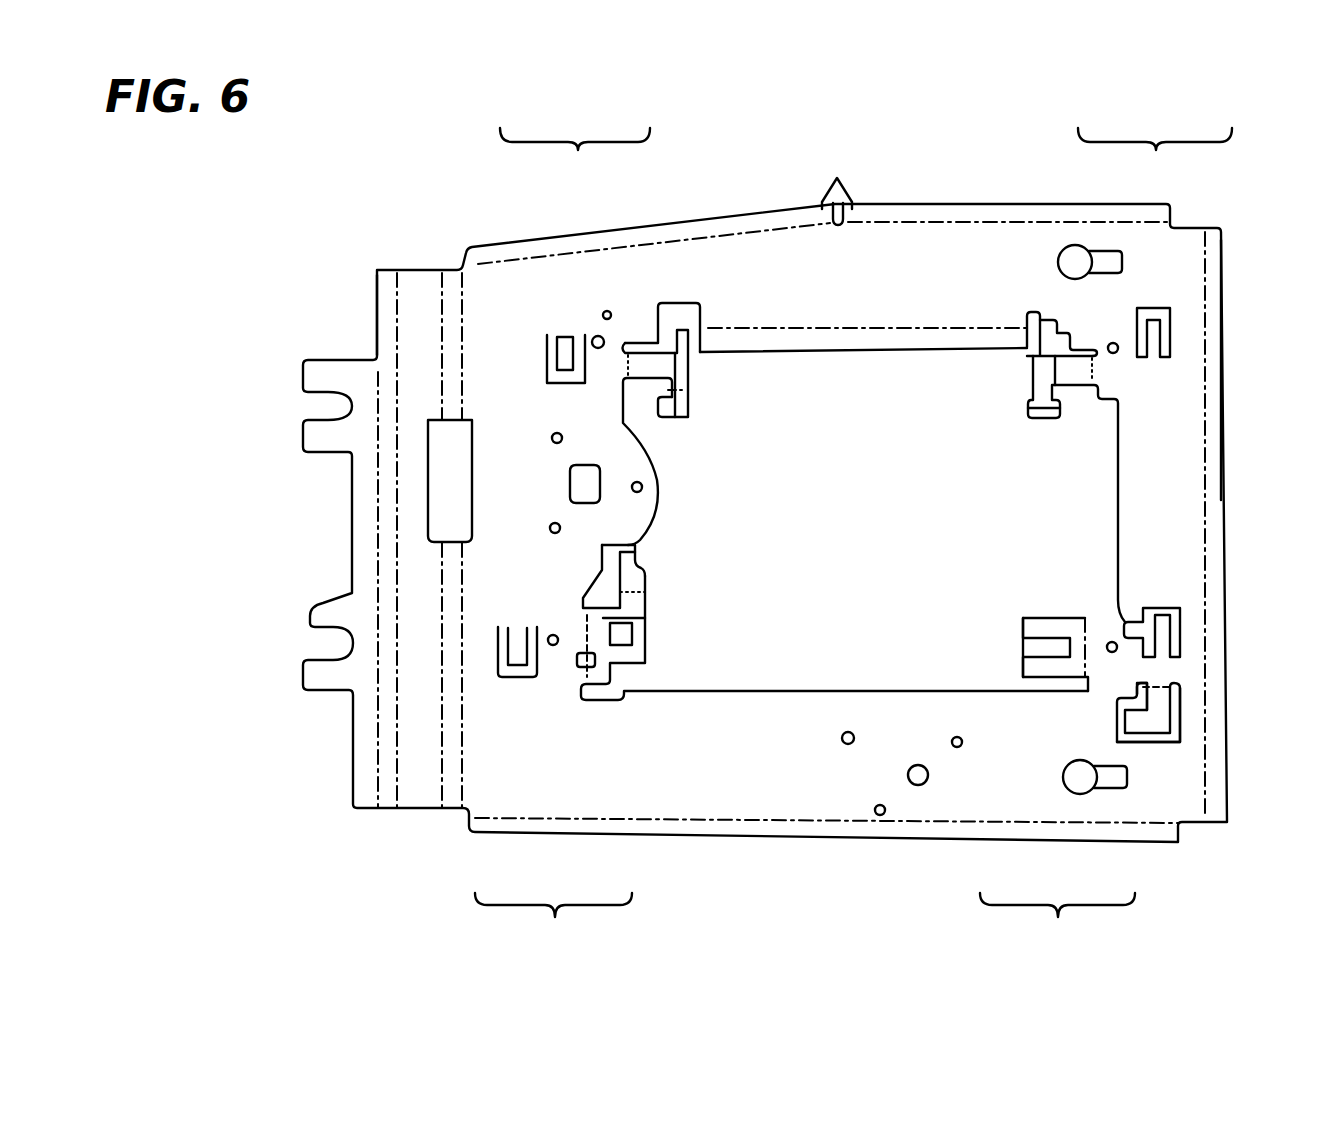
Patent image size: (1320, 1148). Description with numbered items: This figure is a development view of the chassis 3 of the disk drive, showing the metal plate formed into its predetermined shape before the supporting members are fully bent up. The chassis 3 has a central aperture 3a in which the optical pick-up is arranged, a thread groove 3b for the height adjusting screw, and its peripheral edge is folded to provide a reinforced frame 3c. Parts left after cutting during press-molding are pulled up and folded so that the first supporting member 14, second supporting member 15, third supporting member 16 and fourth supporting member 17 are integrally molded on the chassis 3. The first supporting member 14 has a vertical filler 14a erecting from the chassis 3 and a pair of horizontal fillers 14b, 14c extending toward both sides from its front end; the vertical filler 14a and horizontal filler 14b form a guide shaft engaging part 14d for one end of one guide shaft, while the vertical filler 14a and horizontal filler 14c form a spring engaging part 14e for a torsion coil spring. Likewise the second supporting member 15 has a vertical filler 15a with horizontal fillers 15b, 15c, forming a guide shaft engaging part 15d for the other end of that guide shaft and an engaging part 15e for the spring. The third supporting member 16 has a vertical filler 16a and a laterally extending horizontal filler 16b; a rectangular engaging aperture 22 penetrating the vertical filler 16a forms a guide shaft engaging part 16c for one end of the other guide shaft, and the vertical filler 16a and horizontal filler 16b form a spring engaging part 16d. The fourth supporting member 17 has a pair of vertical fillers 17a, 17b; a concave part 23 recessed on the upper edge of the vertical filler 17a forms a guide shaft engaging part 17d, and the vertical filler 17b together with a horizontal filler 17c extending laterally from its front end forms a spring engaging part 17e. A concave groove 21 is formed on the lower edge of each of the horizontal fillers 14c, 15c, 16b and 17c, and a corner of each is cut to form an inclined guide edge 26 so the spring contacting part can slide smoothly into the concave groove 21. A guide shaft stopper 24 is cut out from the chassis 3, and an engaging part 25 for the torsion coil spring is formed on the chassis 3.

The chassis 3 is at (920, 192).
The central aperture 3a is at (823, 514).
The thread groove 3b is at (597, 336).
The reinforced frame 3c is at (783, 853).
The first supporting member 14 is at (763, 231).
The vertical filler 14a is at (660, 365).
The horizontal filler 14b is at (698, 304).
The horizontal filler 14c is at (684, 398).
The guide shaft engaging part 14d is at (632, 400).
The spring engaging part 14e is at (680, 310).
The second supporting member 15 is at (1155, 117).
The vertical filler 15a is at (1067, 375).
The horizontal filler 15b is at (1035, 348).
The horizontal filler 15c is at (1030, 404).
The guide shaft engaging part 15d is at (1052, 334).
The engaging part 15e is at (1095, 410).
The third supporting member 16 is at (781, 768).
The vertical filler 16a is at (603, 618).
The horizontal filler 16b is at (636, 580).
The guide shaft engaging part 16c is at (585, 585).
The spring engaging part 16d is at (632, 660).
The fourth supporting member 17 is at (1057, 927).
The vertical filler 17a is at (1047, 618).
The vertical filler 17b is at (1160, 702).
The horizontal filler 17c is at (1120, 720).
The guide shaft engaging part 17d is at (1012, 662).
The spring engaging part 17e is at (1152, 757).
The concave groove 21 is at (672, 420).
The rectangular engaging aperture 22 is at (620, 637).
The concave part 23 is at (1035, 648).
The guide shaft stopper 24 is at (565, 345).
The engaging part for the torsion coil spring 25 is at (610, 312).
The inclined guide edge 26 is at (688, 414).